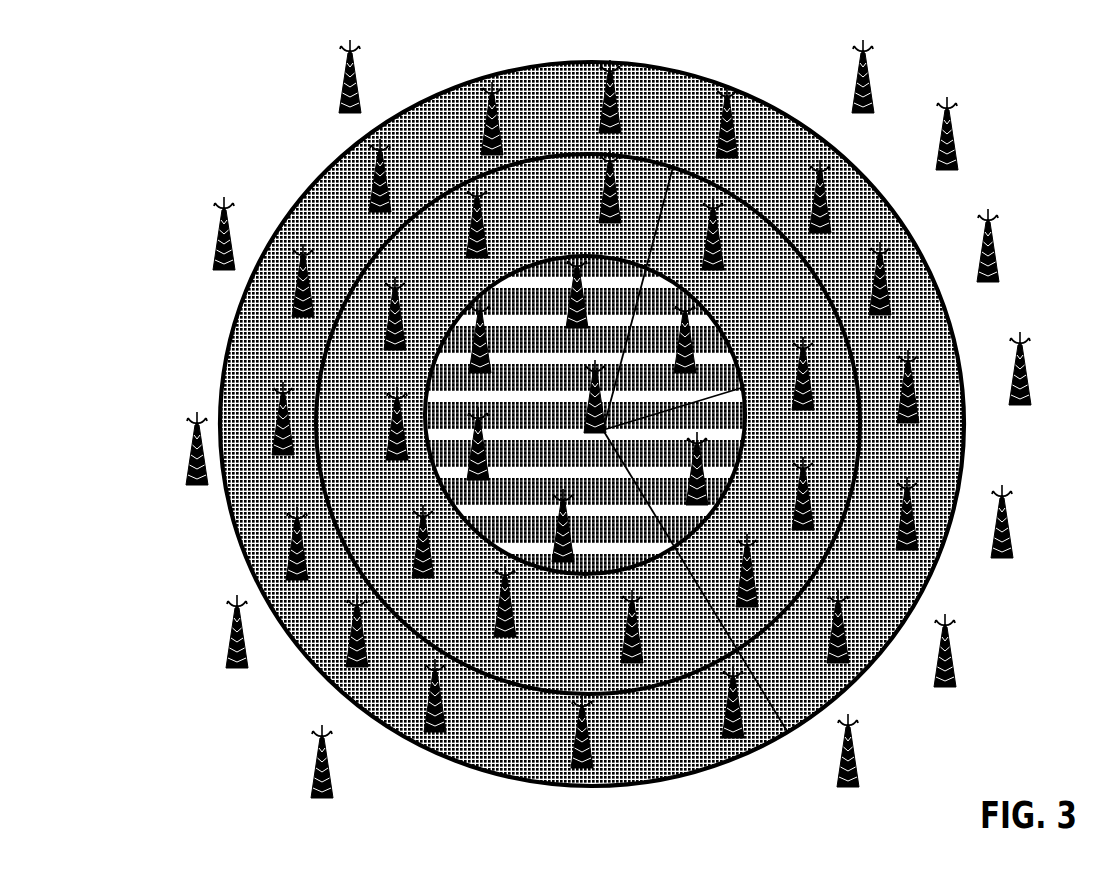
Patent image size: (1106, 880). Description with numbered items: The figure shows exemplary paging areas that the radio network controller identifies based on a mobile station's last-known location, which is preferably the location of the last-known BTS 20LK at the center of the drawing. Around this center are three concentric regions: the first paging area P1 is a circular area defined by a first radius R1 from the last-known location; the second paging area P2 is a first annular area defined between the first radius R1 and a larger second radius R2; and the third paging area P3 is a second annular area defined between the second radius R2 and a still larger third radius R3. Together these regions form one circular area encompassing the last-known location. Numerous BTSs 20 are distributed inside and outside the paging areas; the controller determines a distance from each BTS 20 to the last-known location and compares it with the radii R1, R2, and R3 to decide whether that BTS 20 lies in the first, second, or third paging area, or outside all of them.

The BTS 20 is at (875, 302).
The last-known BTS 20LK is at (587, 424).
The first radius R1 is at (672, 399).
The second radius R2 is at (638, 298).
The third radius R3 is at (702, 580).
The first paging area P1 is at (499, 521).
The second paging area P2 is at (434, 618).
The third paging area P3 is at (374, 698).